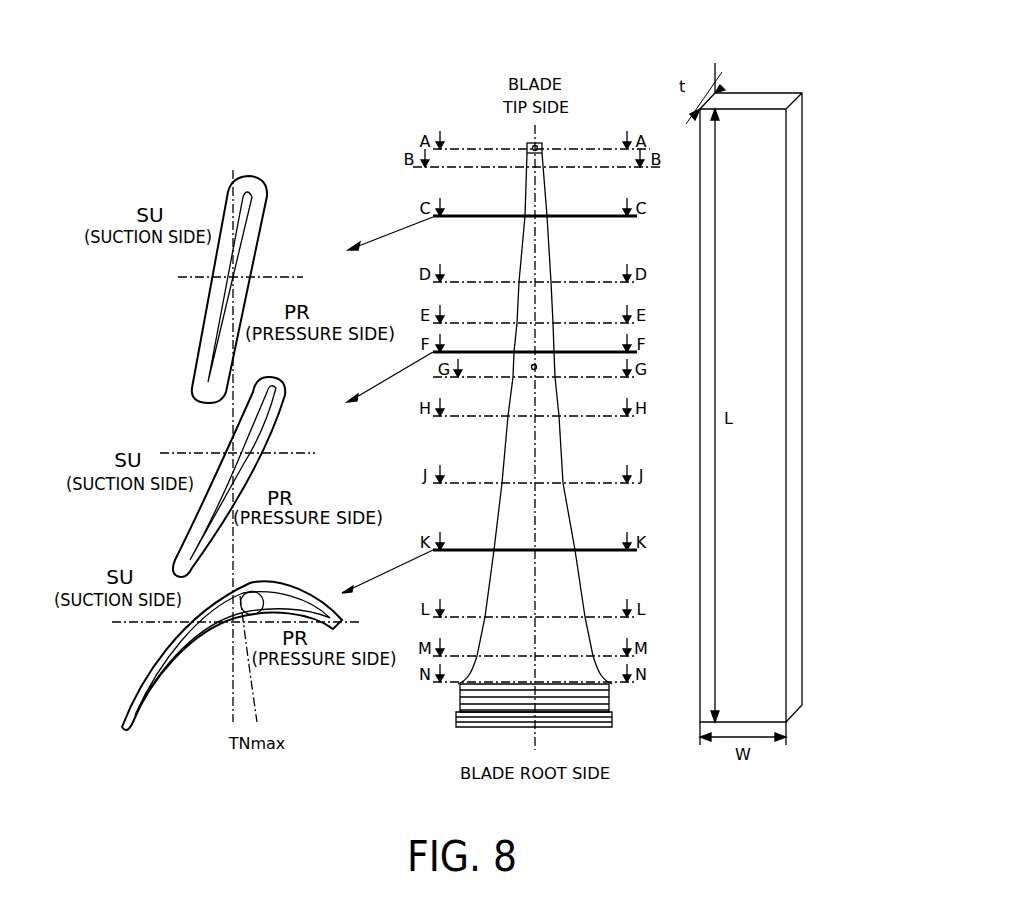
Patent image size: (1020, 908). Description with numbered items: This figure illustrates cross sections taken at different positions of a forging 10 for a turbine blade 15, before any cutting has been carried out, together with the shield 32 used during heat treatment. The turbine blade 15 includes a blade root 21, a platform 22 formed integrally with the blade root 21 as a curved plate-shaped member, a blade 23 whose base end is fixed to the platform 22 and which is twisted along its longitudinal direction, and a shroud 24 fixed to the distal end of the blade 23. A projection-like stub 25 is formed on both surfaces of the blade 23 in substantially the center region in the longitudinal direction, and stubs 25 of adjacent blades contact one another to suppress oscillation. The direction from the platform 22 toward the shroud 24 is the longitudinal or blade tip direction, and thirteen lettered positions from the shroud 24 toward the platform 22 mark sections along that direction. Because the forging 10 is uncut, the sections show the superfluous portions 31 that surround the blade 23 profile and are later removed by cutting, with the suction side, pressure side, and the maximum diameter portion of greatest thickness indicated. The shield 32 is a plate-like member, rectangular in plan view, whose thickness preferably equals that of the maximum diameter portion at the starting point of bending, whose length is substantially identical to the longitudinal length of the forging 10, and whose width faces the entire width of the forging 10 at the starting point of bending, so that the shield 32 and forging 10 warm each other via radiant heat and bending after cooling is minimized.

The forging 10 is at (398, 115).
The turbine blade 15 is at (620, 450).
The blade root 21 is at (458, 716).
The platform 22 is at (607, 685).
The blade 23 is at (563, 506).
The shroud 24 is at (541, 146).
The stub 25 is at (537, 369).
The superfluous portion 31 is at (250, 253).
The shield 32 is at (770, 120).